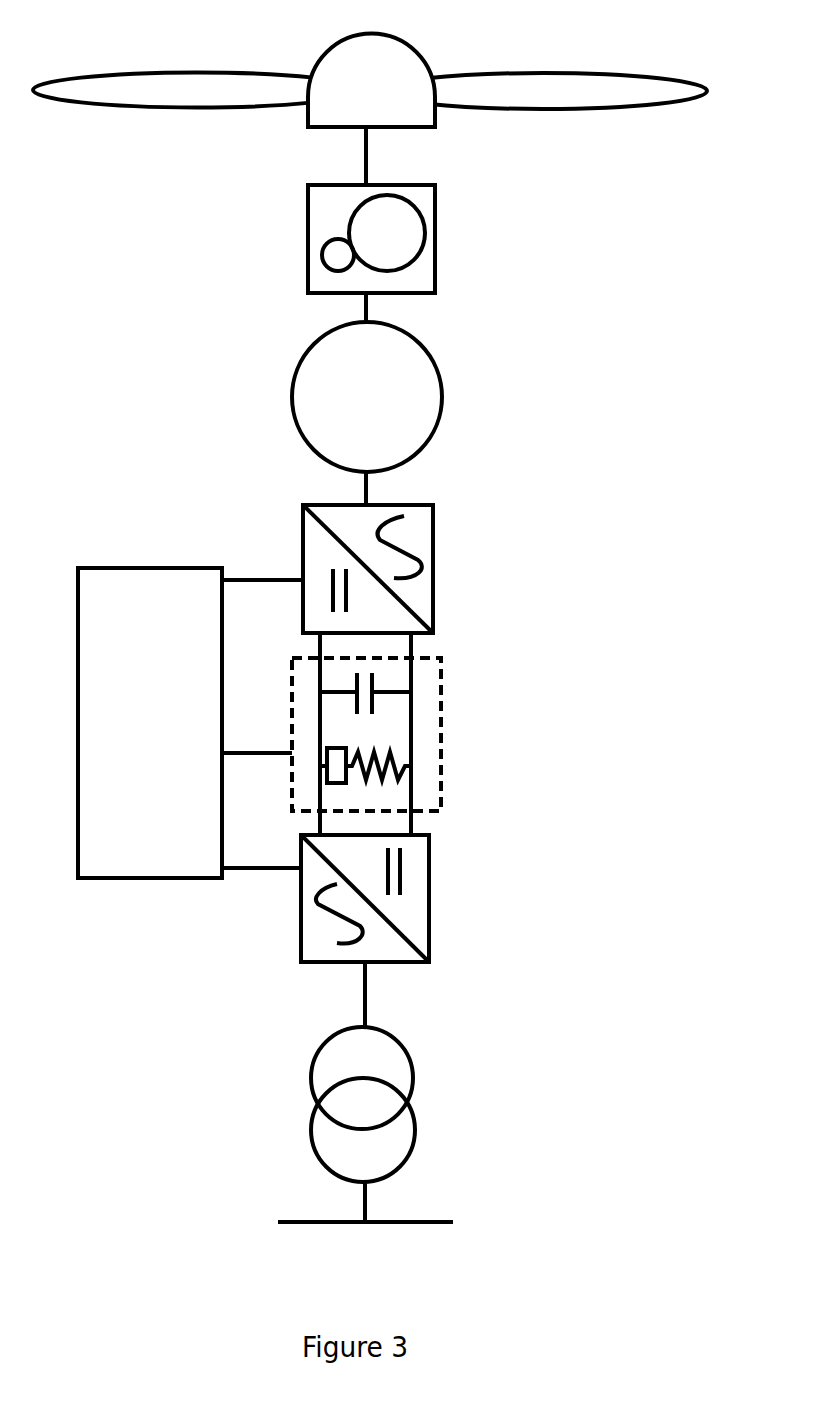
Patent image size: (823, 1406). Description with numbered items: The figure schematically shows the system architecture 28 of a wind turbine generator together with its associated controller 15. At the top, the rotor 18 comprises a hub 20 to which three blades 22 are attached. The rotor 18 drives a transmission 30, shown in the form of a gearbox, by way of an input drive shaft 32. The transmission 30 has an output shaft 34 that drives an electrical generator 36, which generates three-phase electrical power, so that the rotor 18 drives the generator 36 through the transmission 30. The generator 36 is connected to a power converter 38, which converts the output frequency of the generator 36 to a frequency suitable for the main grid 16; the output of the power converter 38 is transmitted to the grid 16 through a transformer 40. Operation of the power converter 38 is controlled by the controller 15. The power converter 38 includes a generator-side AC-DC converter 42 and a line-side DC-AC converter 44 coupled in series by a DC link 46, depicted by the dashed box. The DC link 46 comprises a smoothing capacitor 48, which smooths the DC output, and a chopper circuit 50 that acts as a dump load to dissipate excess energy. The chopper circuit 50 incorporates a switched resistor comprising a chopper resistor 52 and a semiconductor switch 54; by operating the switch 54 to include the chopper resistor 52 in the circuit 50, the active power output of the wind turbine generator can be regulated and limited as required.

The controller 15 is at (132, 567).
The main grid 16 is at (437, 1217).
The rotor 18 is at (478, 155).
The hub 20 is at (397, 53).
The blades 22 is at (662, 73).
The WTG architecture 28 is at (586, 388).
The transmission 30 is at (305, 265).
The input drive shaft 32 is at (365, 163).
The output shaft 34 is at (373, 310).
The electrical generator 36 is at (440, 422).
The power converter 38 is at (598, 681).
The transformer 40 is at (415, 1068).
The generator-side AC-DC converter 42 is at (437, 541).
The line-side DC-AC converter 44 is at (433, 910).
The DC link 46 is at (441, 729).
The smoothing capacitor 48 is at (376, 681).
The chopper circuit 50 is at (383, 778).
The chopper resistor 52 is at (413, 750).
The semiconductor switch 54 is at (320, 776).